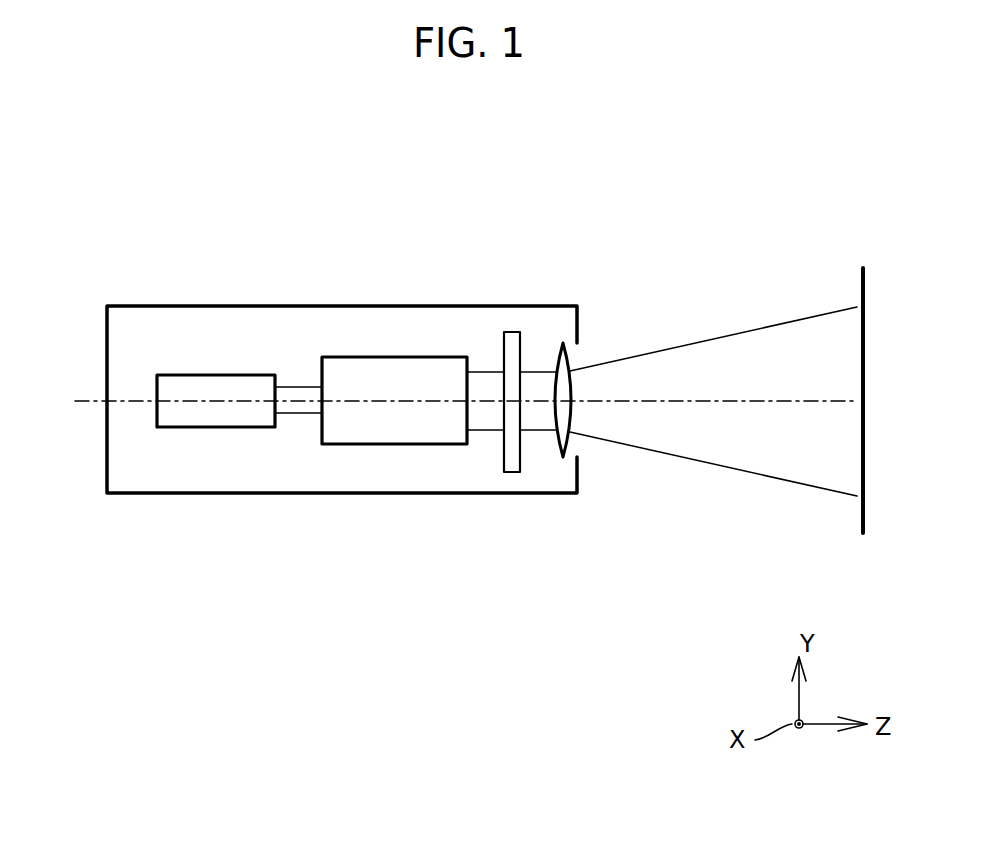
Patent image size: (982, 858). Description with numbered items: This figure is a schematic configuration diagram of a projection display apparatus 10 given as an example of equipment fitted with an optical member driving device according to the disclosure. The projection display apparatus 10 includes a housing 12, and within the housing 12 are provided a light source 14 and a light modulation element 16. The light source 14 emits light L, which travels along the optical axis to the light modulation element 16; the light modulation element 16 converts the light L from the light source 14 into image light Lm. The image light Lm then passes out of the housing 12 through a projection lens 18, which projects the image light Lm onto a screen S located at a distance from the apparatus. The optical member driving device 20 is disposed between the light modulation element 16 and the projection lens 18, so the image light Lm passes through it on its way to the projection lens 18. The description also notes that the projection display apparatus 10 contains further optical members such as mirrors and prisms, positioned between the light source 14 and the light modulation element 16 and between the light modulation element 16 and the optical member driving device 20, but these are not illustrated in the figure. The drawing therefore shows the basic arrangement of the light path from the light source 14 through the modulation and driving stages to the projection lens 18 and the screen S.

The projection display apparatus 10 is at (173, 253).
The housing 12 is at (107, 460).
The light source 14 is at (222, 413).
The light modulation element 16 is at (395, 413).
The projection lens 18 is at (565, 445).
The optical member driving device 20 is at (511, 332).
The light L is at (292, 387).
The image light Lm is at (488, 372).
The screen S is at (863, 283).